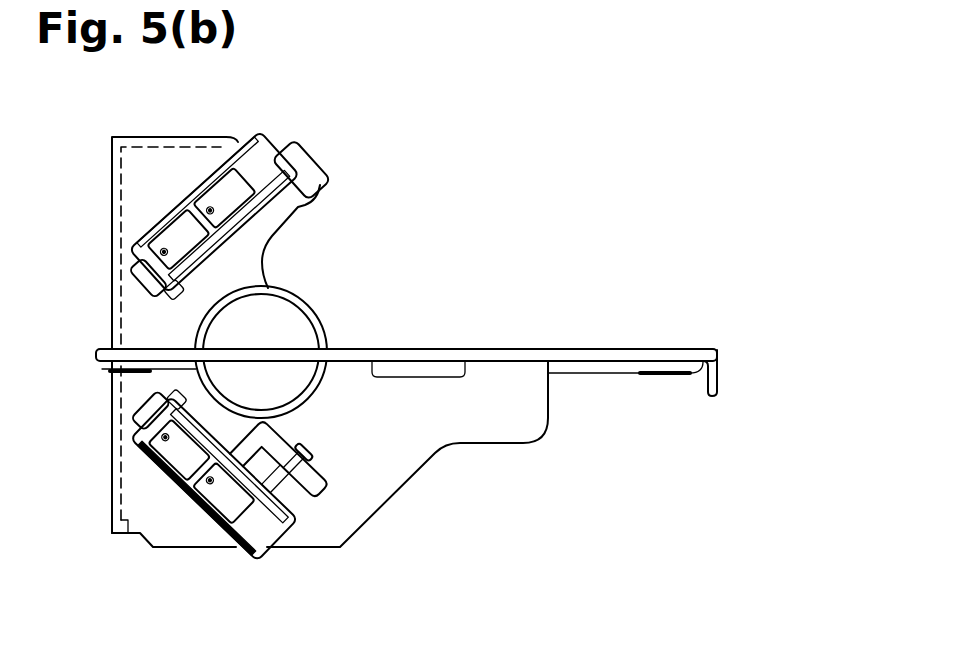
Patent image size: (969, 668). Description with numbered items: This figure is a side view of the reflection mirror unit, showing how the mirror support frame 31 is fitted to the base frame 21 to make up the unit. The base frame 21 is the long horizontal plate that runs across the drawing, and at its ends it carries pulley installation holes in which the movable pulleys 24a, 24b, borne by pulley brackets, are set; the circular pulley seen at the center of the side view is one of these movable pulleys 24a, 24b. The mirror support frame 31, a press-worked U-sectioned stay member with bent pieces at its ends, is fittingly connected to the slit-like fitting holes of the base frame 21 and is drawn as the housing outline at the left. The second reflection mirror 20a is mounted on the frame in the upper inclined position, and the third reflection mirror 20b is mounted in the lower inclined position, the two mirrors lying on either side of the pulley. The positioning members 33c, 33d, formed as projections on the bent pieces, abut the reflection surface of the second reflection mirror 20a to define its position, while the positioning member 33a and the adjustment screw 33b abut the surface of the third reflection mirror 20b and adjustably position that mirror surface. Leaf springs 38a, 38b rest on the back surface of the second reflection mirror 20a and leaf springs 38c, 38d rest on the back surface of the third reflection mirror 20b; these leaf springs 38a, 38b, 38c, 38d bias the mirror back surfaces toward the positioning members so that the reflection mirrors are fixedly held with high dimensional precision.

The base frame 21 is at (603, 355).
The mirror support frame 31 is at (112, 197).
The movable pulley 24a is at (293, 320).
The movable pulley 24b is at (261, 352).
The leaf spring 38a is at (245, 180).
The leaf spring 38b is at (224, 198).
The leaf spring 38c is at (243, 512).
The leaf spring 38d is at (224, 493).
The second reflection mirror 20a is at (305, 154).
The third reflection mirror 20b is at (138, 444).
The positioning member 33a is at (158, 410).
The adjustment screw 33b is at (312, 447).
The positioning member 33c is at (168, 262).
The positioning member 33d is at (297, 204).